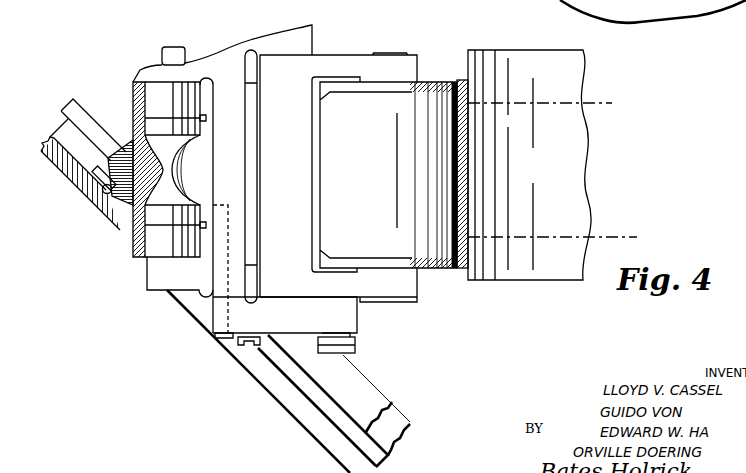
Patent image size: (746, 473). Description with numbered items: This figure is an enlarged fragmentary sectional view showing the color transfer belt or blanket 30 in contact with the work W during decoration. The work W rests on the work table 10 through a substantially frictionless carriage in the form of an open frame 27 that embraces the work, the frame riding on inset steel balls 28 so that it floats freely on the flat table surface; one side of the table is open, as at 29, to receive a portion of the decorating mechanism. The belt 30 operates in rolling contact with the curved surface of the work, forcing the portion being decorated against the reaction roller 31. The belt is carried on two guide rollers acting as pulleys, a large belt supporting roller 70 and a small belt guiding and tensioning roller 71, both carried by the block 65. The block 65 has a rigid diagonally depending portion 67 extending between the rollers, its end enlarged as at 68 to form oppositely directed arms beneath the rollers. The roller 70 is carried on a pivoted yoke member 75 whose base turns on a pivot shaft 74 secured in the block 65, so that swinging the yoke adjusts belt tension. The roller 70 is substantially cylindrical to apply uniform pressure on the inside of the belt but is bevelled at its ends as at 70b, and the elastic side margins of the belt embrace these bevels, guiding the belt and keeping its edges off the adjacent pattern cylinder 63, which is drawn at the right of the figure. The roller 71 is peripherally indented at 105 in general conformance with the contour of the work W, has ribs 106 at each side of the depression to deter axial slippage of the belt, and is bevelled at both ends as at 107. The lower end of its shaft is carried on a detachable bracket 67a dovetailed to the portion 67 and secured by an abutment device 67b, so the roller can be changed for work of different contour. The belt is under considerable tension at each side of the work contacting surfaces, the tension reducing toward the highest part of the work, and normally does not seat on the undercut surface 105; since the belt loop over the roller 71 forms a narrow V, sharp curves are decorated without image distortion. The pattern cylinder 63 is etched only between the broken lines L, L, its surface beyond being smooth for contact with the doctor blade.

The work table 10 is at (317, 443).
The open frame 27 is at (390, 423).
The inset steel balls 28 is at (104, 192).
The open side of table 29 is at (270, 388).
The color transfer belt 30 is at (464, 262).
The reaction roller 31 is at (72, 97).
The cylinder 63 is at (529, 165).
The block 65 is at (216, 50).
The diagonally depending portion 67 is at (244, 193).
The detachable bracket 67a is at (187, 284).
The abutment device 67b is at (240, 345).
The enlarged end 68 is at (347, 321).
The belt supporting roller 70 is at (388, 175).
The bevelled ends 70b is at (428, 88).
The belt guiding and tensioning roller 71 is at (155, 98).
The pivot shaft 74 is at (315, 193).
The pivoted yoke member 75 is at (412, 300).
The peripheral indentation 105 is at (190, 172).
The ribs 106 is at (266, 225).
The bevelled roll ends 107 is at (157, 263).
The work W is at (363, 390).
The broken lines L is at (633, 226).